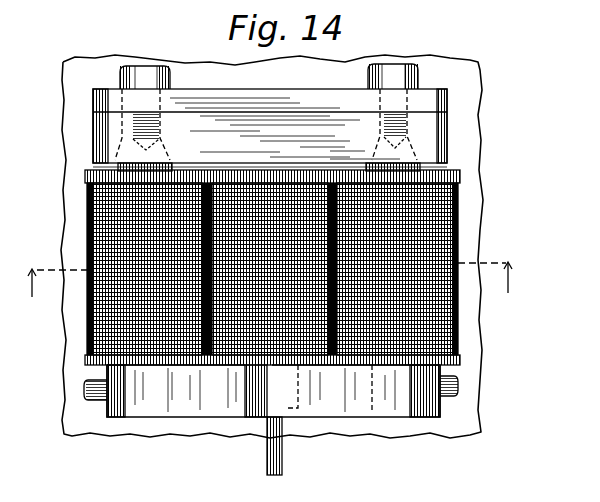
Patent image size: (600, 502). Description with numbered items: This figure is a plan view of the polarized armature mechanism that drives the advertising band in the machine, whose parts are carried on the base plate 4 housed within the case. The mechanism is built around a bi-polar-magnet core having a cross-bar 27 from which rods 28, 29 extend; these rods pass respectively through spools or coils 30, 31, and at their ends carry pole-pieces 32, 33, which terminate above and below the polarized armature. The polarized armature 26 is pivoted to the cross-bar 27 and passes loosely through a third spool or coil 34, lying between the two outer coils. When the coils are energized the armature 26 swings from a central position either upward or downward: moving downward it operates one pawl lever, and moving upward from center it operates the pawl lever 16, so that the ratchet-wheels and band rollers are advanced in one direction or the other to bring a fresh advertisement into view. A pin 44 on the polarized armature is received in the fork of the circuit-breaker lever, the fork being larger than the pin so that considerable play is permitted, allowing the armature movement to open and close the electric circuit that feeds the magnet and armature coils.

The base plate 4 is at (398, 430).
The pawl lever 16 is at (269, 290).
The polarized armature 26 is at (288, 408).
The cross-bar 27 is at (270, 128).
The rod 28 is at (363, 164).
The rod 29 is at (170, 166).
The spool or coil 30 is at (397, 269).
The spool or coil 31 is at (149, 269).
The pole-piece 32 is at (365, 391).
The pole-piece 33 is at (178, 391).
The spool or coil 34 is at (274, 269).
The pin 44 is at (268, 458).